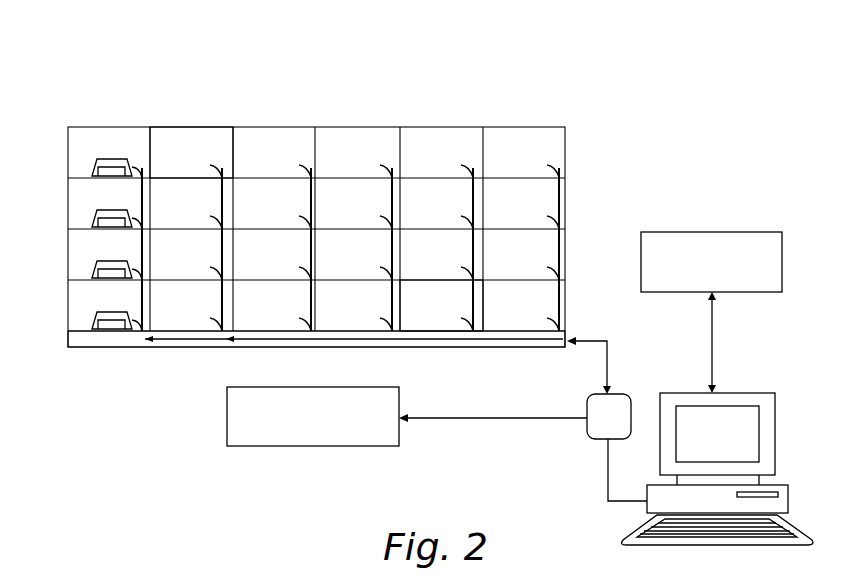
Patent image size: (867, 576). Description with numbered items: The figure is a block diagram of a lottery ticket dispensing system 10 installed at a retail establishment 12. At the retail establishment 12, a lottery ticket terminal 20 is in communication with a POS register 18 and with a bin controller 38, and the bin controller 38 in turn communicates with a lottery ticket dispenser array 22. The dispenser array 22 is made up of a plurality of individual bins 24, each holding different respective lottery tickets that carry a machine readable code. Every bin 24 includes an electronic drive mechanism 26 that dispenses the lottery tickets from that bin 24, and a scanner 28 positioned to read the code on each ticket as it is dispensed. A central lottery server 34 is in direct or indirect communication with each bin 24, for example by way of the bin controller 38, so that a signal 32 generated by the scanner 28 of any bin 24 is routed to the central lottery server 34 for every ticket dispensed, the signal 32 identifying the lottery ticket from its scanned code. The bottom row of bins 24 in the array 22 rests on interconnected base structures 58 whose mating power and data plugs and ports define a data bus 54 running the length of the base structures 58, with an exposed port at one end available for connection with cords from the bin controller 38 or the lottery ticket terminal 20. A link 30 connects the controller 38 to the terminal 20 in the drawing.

The system 10 is at (309, 72).
The retail establishment 12 is at (619, 208).
The POS register 18 is at (782, 270).
The lottery ticket terminal 20 is at (789, 503).
The lottery ticket dispenser array 22 is at (429, 119).
The bin 24 is at (197, 141).
The electronic drive mechanism 26 is at (92, 218).
The scanner 28 is at (107, 166).
The communication link to terminal 30 is at (607, 483).
The signal 32 is at (492, 419).
The central lottery server 34 is at (311, 447).
The bin controller 38 is at (590, 396).
The data bus 54 is at (262, 341).
The base structure 58 is at (99, 340).